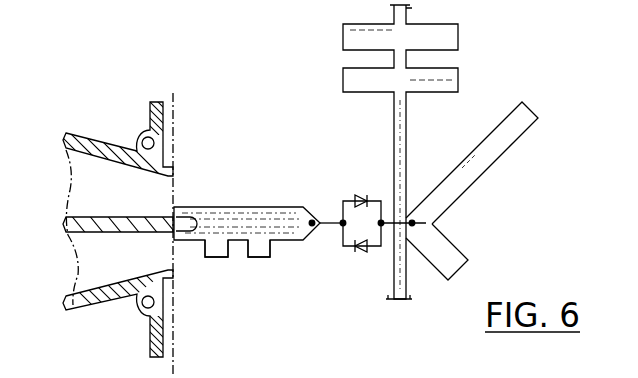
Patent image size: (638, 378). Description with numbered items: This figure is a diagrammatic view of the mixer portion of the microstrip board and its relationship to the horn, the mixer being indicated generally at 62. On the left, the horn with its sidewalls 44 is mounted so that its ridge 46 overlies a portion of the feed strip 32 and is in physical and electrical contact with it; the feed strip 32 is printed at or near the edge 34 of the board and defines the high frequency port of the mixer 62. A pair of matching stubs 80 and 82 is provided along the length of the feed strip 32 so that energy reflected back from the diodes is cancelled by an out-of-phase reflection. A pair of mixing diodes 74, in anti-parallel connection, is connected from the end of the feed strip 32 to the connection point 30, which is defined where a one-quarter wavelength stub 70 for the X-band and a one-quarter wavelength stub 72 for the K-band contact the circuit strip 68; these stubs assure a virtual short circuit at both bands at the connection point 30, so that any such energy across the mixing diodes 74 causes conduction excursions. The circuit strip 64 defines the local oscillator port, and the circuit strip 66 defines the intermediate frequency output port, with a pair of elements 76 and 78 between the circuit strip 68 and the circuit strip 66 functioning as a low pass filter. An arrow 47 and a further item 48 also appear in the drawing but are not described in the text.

The connection point 30 is at (431, 222).
The feed strip 32 is at (262, 206).
The edge of the microstrip board 34 is at (146, 124).
The sidewalls 44 is at (93, 137).
The ridge 46 is at (106, 216).
The direction of movement arrow 47 is at (197, 190).
The housing 48 is at (285, 188).
The mixer 62 is at (313, 293).
The circuit strip 64 is at (396, 271).
The circuit strip 66 is at (407, 15).
The circuit strip 68 is at (402, 148).
The one-quarter wavelength stub 70 is at (500, 142).
The one-quarter wavelength stub 72 is at (450, 256).
The pair of mixing diodes 74 is at (355, 175).
The element 76 is at (453, 37).
The element 78 is at (453, 80).
The matching stub 80 is at (217, 258).
The matching stub 82 is at (257, 258).